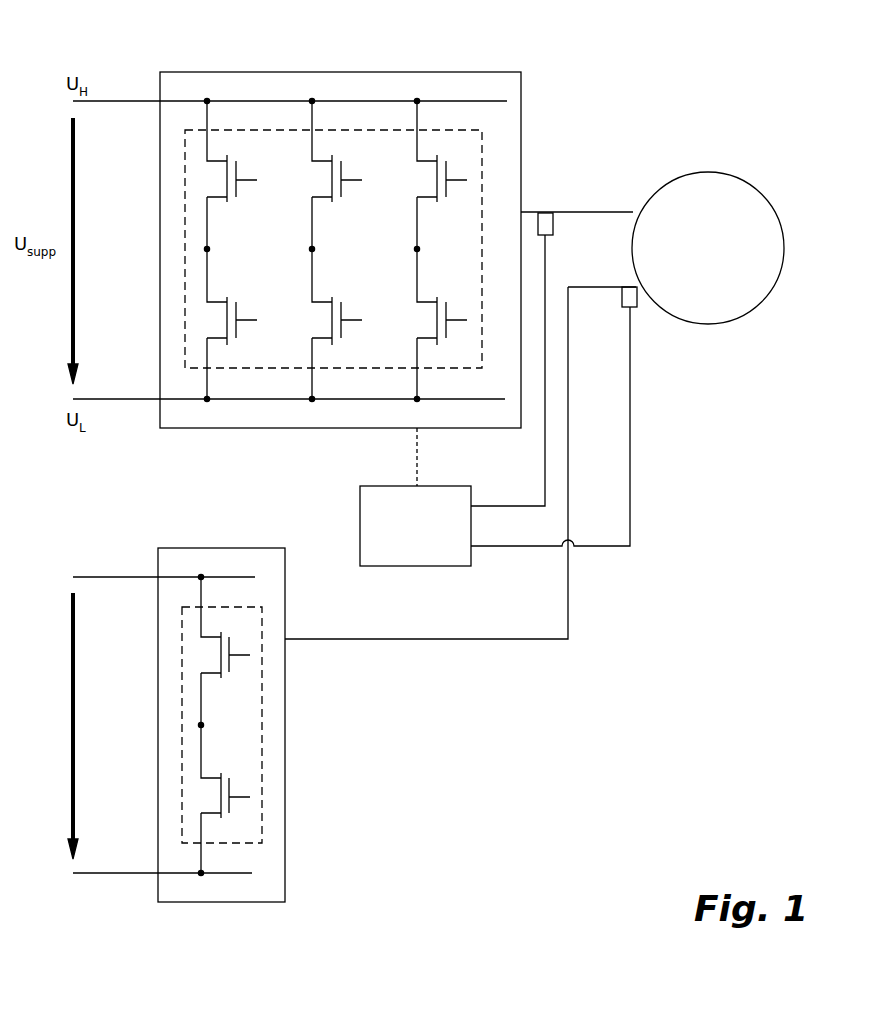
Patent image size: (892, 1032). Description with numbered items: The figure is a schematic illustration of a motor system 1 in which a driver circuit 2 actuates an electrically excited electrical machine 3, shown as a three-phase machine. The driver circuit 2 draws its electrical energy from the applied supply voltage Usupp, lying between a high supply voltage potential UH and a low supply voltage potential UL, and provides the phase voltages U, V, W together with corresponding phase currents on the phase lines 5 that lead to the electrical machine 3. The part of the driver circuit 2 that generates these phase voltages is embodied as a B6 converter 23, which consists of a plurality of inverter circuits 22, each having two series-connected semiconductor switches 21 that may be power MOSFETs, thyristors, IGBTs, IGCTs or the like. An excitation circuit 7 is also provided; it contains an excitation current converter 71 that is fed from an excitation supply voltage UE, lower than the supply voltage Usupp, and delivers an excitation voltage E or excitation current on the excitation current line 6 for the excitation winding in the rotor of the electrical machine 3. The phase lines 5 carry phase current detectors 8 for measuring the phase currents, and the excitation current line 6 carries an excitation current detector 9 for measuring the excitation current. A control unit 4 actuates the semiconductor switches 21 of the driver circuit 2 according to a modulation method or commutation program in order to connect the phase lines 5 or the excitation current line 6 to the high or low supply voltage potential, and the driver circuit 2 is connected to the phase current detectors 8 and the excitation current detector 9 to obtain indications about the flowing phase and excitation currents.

The motor system 1 is at (700, 95).
The driver circuit 2 is at (340, 72).
The electrically excited electrical machine 3 is at (708, 325).
The control unit 4 is at (360, 503).
The phase lines 5 is at (635, 212).
The excitation current line 6 is at (608, 288).
The excitation circuit 7 is at (285, 724).
The phase current detectors 8 is at (554, 224).
The excitation current detector 9 is at (637, 308).
The semiconductor switches 21 is at (213, 178).
The inverter circuits 22 is at (198, 247).
The B6 converter 23 is at (245, 130).
The excitation current converter 71 is at (228, 607).